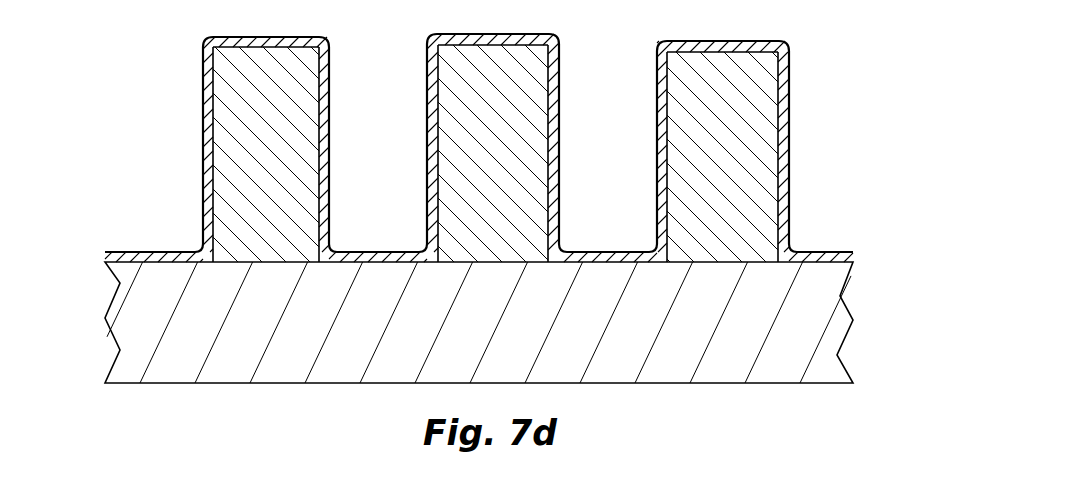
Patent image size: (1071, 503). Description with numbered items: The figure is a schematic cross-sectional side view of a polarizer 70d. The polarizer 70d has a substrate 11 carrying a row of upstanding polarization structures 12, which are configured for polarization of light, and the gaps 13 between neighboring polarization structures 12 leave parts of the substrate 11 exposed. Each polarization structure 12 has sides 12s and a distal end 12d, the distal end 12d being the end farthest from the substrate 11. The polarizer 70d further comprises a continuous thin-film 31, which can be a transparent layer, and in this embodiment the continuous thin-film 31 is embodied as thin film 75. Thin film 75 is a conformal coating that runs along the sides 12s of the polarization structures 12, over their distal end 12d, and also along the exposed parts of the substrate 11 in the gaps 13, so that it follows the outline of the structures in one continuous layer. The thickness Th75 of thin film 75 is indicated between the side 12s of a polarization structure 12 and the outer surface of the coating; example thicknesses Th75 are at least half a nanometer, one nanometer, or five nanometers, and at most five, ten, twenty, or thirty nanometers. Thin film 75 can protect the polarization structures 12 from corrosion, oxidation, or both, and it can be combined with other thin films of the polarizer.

The substrate 11 is at (500, 332).
The polarization structures 12 is at (278, 167).
The distal end 12d is at (278, 39).
The sides 12s is at (546, 81).
The trench between fins 13 is at (493, 148).
The continuous thin-film 31 is at (206, 168).
The thin film 75 is at (783, 175).
The thickness of thin film 75 Th75 is at (740, 82).
The polarizer 70d is at (76, 273).